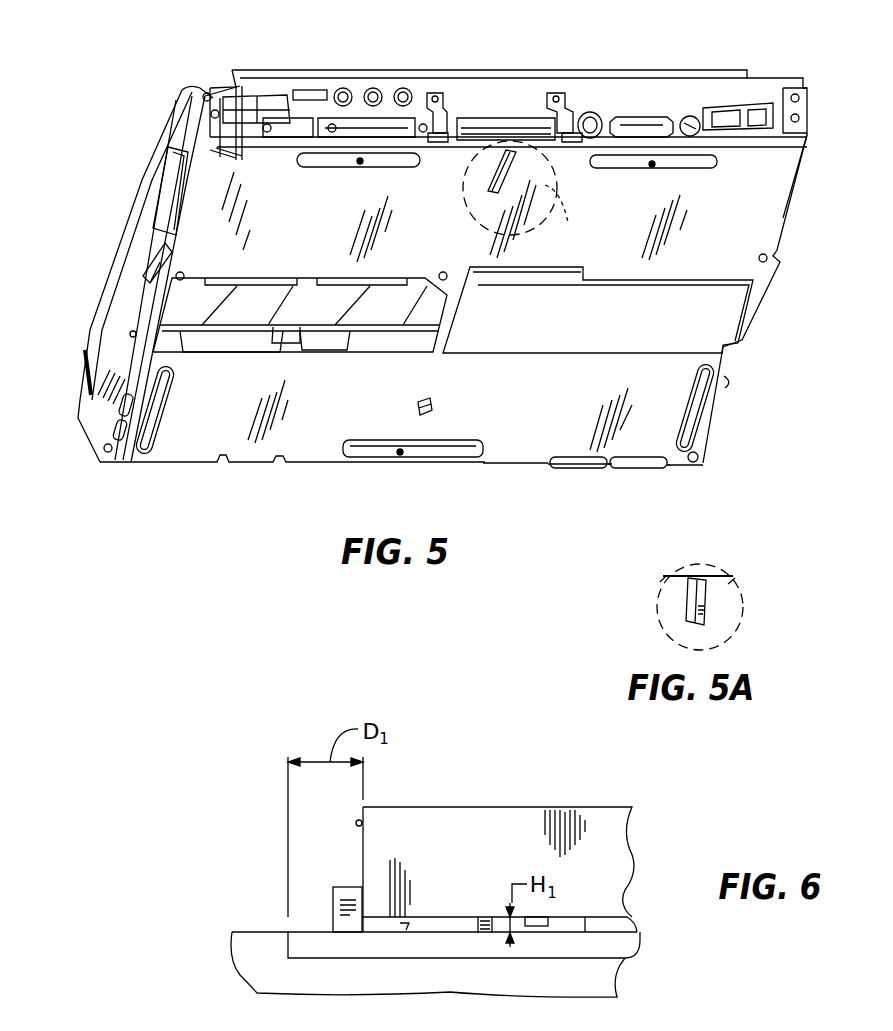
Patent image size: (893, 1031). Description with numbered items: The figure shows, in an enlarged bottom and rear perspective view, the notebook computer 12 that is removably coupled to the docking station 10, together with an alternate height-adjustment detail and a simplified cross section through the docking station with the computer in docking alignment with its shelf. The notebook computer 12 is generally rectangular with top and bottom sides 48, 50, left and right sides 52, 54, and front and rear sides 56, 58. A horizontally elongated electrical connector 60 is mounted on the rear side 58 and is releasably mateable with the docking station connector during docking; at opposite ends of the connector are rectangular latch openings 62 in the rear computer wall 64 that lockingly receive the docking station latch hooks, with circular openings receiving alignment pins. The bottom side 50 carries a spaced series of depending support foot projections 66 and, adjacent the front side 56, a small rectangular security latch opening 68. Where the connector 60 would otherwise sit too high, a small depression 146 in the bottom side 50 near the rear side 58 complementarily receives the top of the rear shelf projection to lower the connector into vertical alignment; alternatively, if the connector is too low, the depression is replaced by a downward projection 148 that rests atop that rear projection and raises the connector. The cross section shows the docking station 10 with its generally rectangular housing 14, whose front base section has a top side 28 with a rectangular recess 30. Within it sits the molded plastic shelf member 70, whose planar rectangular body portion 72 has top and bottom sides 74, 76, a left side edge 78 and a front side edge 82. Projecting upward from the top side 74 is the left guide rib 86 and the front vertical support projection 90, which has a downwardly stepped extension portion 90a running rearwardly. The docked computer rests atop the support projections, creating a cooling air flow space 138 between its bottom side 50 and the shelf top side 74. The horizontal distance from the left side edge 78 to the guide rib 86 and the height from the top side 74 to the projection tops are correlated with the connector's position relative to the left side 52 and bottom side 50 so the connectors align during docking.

In FIG. 6, the docking station 10 is at (212, 960).
In FIG. 5, the notebook computer 12 is at (636, 46).
In FIG. 6, the notebook computer 12 is at (575, 795).
In FIG. 6, the housing 14 is at (252, 985).
In FIG. 6, the top side 28 is at (240, 931).
In FIG. 6, the rectangular recess 30 is at (297, 932).
In FIG. 5, the top side 48 is at (362, 70).
In FIG. 6, the top side 48 is at (617, 807).
In FIG. 5, the bottom side 50 is at (549, 403).
In FIG. 5A, the bottom side 50 is at (732, 621).
In FIG. 6, the bottom side 50 is at (637, 925).
In FIG. 5, the left side 52 is at (776, 255).
In FIG. 6, the left side 52 is at (365, 822).
In FIG. 5, the right side 54 is at (123, 324).
In FIG. 5, the front side 56 is at (533, 466).
In FIG. 6, the front side 56 is at (491, 863).
In FIG. 5, the rear side 58 is at (673, 113).
In FIG. 5A, the rear side 58 is at (707, 572).
In FIG. 5, the electrical connector 60 is at (503, 115).
In FIG. 5, the latch openings 62 is at (433, 93).
In FIG. 5, the rear computer wall 64 is at (436, 143).
In FIG. 5, the support foot projections 66 is at (320, 167).
In FIG. 6, the support foot projections 66 is at (538, 928).
In FIG. 5, the security latch opening 68 is at (428, 400).
In FIG. 6, the shelf member 70 is at (602, 982).
In FIG. 6, the shelf body portion 72 is at (478, 950).
In FIG. 6, the top side 74 is at (590, 930).
In FIG. 6, the bottom side 76 is at (625, 960).
In FIG. 6, the left side edge 78 is at (280, 956).
In FIG. 6, the front side edge 82 is at (349, 957).
In FIG. 6, the left guide rib 86 is at (346, 886).
In FIG. 6, the vertical support projection 90 is at (478, 917).
In FIG. 6, the extension portion 90a is at (455, 933).
In FIG. 6, the space 138 is at (407, 927).
In FIG. 5, the depression 146 is at (488, 192).
In FIG. 5A, the downward projection 148 is at (707, 600).